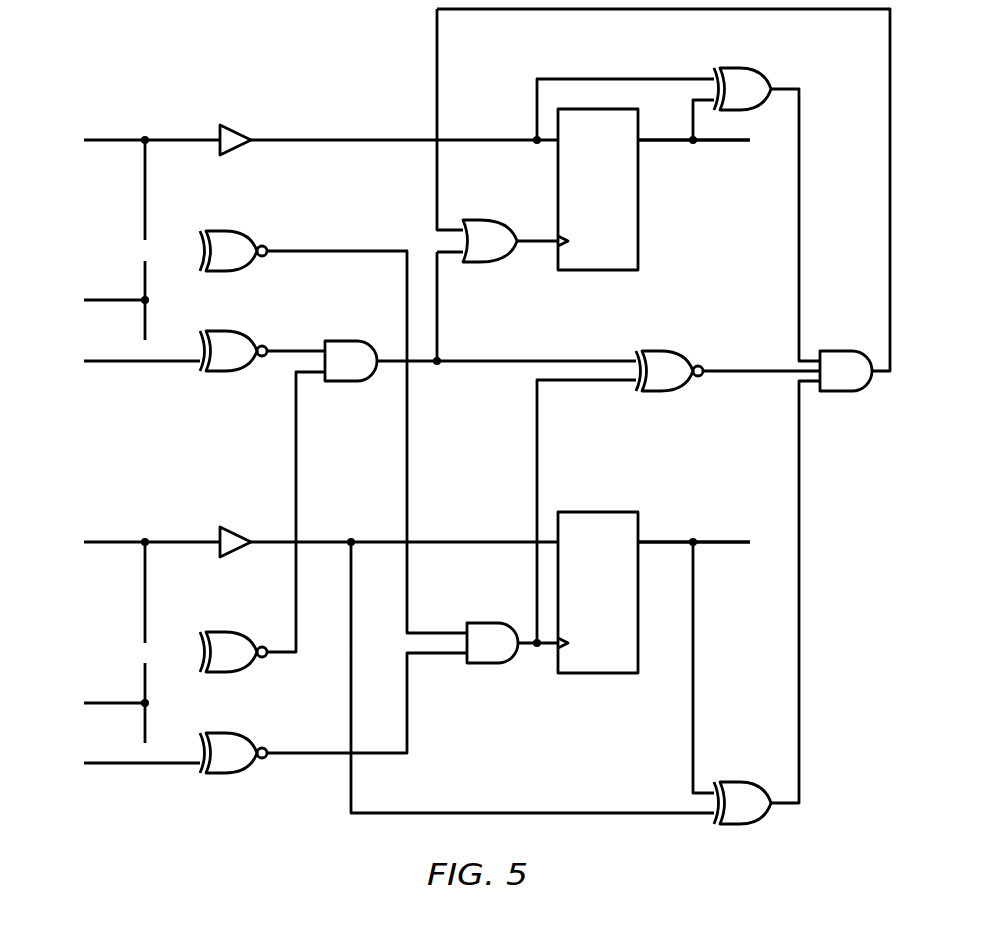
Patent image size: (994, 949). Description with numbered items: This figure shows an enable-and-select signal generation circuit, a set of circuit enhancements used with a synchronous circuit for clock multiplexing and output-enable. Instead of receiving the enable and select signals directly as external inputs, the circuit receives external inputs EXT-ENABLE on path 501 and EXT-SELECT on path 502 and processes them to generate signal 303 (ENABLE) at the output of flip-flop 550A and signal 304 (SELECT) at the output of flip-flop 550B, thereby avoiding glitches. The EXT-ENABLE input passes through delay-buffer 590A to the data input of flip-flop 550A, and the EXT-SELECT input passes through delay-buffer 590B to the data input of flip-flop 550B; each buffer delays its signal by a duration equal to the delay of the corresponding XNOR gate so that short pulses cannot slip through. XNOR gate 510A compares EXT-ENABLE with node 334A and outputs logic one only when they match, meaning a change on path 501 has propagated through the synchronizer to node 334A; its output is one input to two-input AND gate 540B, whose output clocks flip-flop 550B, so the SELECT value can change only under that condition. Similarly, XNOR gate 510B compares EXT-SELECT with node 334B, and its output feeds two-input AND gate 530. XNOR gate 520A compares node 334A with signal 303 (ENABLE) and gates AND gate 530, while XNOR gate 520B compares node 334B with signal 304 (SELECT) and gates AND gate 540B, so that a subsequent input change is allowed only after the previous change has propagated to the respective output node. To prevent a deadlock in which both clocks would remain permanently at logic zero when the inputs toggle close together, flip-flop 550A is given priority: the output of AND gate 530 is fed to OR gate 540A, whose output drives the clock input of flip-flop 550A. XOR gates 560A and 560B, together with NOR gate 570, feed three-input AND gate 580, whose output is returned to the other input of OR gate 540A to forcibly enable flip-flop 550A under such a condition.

The EXT-ENABLE path 501 is at (130, 139).
The EXT-SELECT path 502 is at (130, 541).
The delay-buffer 590A is at (255, 112).
The delay-buffer 590B is at (255, 515).
The XNOR gate 510A is at (233, 230).
The XNOR gate 520A is at (233, 372).
The XNOR gate 510B is at (233, 674).
The XNOR gate 520B is at (233, 775).
The two-input AND gate 530 is at (347, 340).
The OR gate 540A is at (487, 219).
The two-input AND gate 540B is at (485, 666).
The flip-flop 550A is at (597, 272).
The flip-flop 550B is at (598, 675).
The XOR gate 560A is at (748, 68).
The XOR gate 560B is at (747, 826).
The NOR gate 570 is at (672, 393).
The three-input AND gate 580 is at (847, 393).
The synchronizer output node 334A is at (110, 298).
The synchronizer output node 334B is at (108, 706).
The ENABLE signal 303 is at (142, 364).
The SELECT signal 304 is at (142, 766).